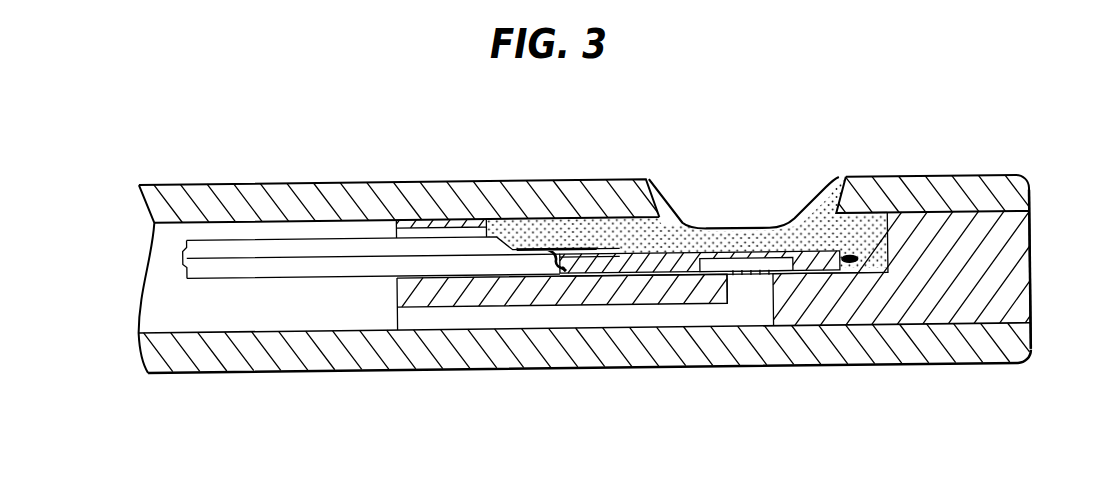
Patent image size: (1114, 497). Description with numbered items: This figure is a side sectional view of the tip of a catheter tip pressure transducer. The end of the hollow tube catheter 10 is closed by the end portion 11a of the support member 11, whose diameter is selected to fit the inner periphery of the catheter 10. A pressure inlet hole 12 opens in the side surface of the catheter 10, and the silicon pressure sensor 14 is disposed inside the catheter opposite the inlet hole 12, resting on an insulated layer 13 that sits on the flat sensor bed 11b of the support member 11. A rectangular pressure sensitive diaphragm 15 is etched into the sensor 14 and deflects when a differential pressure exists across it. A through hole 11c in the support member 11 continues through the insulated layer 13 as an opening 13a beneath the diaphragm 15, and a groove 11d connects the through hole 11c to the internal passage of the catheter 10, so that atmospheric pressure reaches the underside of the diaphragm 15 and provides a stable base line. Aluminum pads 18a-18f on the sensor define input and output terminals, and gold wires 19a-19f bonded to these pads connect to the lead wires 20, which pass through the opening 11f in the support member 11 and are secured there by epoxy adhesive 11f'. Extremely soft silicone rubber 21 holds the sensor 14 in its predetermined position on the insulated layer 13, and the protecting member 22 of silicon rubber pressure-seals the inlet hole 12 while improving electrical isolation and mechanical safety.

The hollow tube catheter 10 is at (533, 364).
The support member 11 is at (397, 300).
The end portion 11a is at (1030, 302).
The flat sensor bed 11b is at (813, 285).
The through hole 11c is at (745, 290).
The groove 11d is at (612, 320).
The opening 11f is at (428, 190).
The epoxy adhesive 11f' is at (470, 190).
The pressure inlet hole 12 is at (713, 227).
The insulated layer 13 is at (670, 279).
The opening 13a is at (757, 287).
The silicon pressure sensor 14 is at (680, 262).
The pressure sensitive diaphragm 15 is at (750, 264).
The aluminum pads 18a-18f is at (613, 258).
The gold wires 19a-19f is at (580, 255).
The lead wires 20 is at (257, 259).
The silicone rubber 21 is at (860, 270).
The protecting member 22 is at (835, 223).